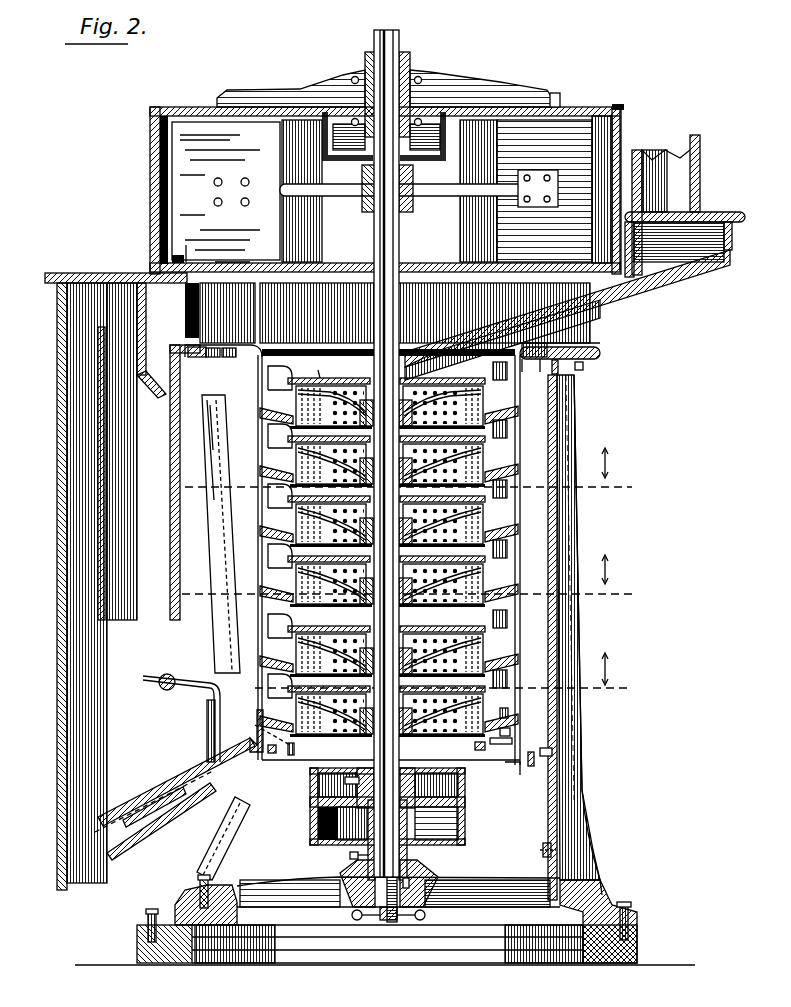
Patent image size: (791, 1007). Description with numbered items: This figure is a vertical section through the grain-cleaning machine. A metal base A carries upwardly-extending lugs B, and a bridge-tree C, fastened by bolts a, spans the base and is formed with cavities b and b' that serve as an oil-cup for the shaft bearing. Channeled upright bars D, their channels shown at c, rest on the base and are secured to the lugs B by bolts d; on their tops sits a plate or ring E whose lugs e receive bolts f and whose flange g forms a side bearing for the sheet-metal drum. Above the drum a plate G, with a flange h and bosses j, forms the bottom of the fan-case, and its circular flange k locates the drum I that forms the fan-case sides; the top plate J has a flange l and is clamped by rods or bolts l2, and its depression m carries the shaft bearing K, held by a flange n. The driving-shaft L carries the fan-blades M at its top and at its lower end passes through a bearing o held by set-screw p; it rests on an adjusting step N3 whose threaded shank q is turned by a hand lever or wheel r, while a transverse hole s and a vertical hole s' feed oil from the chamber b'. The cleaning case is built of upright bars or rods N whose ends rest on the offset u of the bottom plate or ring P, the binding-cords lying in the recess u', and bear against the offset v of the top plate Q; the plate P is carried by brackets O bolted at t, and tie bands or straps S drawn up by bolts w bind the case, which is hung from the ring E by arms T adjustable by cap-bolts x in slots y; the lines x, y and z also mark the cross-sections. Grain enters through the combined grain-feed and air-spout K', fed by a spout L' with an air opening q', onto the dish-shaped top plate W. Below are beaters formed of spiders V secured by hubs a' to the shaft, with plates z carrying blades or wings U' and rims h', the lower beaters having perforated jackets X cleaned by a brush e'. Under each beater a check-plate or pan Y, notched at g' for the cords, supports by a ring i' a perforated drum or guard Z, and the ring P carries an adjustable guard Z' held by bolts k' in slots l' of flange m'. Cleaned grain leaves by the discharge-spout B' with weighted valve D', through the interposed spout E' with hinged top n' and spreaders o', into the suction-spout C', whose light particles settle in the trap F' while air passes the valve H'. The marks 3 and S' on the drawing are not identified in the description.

The driving-shaft L is at (386, 443).
The shaft bearing K is at (384, 132).
The flange n is at (561, 92).
The top plate of fan-case J is at (590, 108).
The flange l is at (626, 107).
The rods or bolts l2 is at (621, 137).
The drum I is at (155, 152).
The fan-blades M is at (382, 191).
The depression m is at (419, 170).
The spout L' is at (685, 205).
The opening q' is at (738, 236).
The combined grain-feed and air-spout K' is at (567, 301).
The ring i' is at (387, 381).
The plate G is at (150, 272).
The circular flange k is at (159, 246).
The flange h is at (187, 246).
The bosses j is at (225, 262).
The suction-spout C' is at (87, 586).
The valve H' is at (151, 340).
The settling chamber or trap F' is at (173, 482).
The arms T is at (352, 555).
The cap-bolts x is at (406, 421).
The slots y is at (406, 474).
The plate z is at (445, 571).
The upright bars D is at (402, 637).
The weighted valve D' is at (181, 718).
The discharge-spout B' is at (260, 731).
The hinged top n' is at (175, 785).
The leaders or spreaders o' is at (154, 807).
The interposed spout E' is at (161, 821).
The bolts a is at (223, 852).
The plate or ring E is at (587, 336).
The flange g is at (568, 342).
The bolts f is at (584, 367).
The lugs e is at (576, 377).
The offset v is at (532, 371).
The plate W is at (389, 393).
The plate Q is at (323, 367).
The spider or arms V is at (420, 750).
The blades or wings U' is at (386, 513).
The jacket or wall X is at (287, 578).
The drum or guard Z is at (385, 598).
The guard or drum Z' is at (390, 717).
The bracket 3 is at (284, 384).
The wedge S' is at (373, 573).
The tie bands or straps S is at (524, 415).
The upright bars or rods N is at (510, 440).
The pan or check-plate Y is at (506, 470).
The bolts w is at (262, 552).
The offsets or notches g' is at (390, 598).
The brush e' is at (391, 614).
The hubs a' is at (411, 539).
The rim or flange h' is at (418, 499).
The channel c is at (560, 762).
The offset or recess u' is at (517, 711).
The offset u is at (515, 732).
The flange m' is at (484, 753).
The bearing o is at (472, 805).
The circular plate or ring P is at (505, 766).
The bolts t is at (519, 782).
The bolts d is at (542, 850).
The lugs B is at (587, 618).
The angle-irons or brackets O is at (387, 844).
The set-screw p is at (348, 819).
The cavity b' is at (336, 867).
The cavity b is at (429, 858).
The vertical hole s' is at (407, 885).
The transverse hole s is at (355, 917).
The hand lever or wheel r is at (426, 915).
The threaded shank q is at (380, 908).
The step N3 is at (387, 944).
The bridge-tree C is at (367, 894).
The base A is at (608, 900).
The slots l' is at (269, 759).
The bolts k' is at (289, 757).